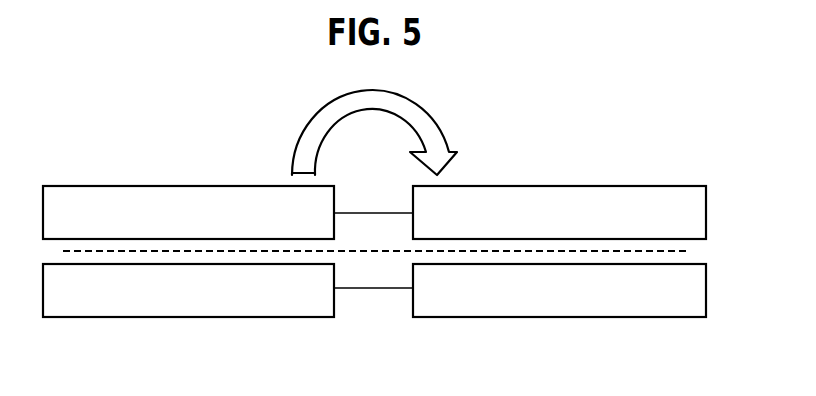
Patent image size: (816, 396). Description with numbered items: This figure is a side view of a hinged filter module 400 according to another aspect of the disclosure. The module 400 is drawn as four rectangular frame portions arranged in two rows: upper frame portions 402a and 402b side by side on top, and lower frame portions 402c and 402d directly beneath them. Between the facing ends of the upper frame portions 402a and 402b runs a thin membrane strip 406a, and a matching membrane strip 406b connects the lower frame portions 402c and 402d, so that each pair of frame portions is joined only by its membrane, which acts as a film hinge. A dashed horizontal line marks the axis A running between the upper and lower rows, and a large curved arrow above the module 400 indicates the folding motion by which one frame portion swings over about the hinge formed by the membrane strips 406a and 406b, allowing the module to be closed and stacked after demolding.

The foldable device 400 is at (178, 133).
The first upper segment 402a is at (69, 196).
The second upper segment 402b is at (565, 195).
The first lower segment 402c is at (78, 307).
The second lower segment 402d is at (567, 308).
The upper hinge connector 406a is at (373, 220).
The lower hinge connector 406b is at (382, 283).
The fold axis A is at (688, 251).